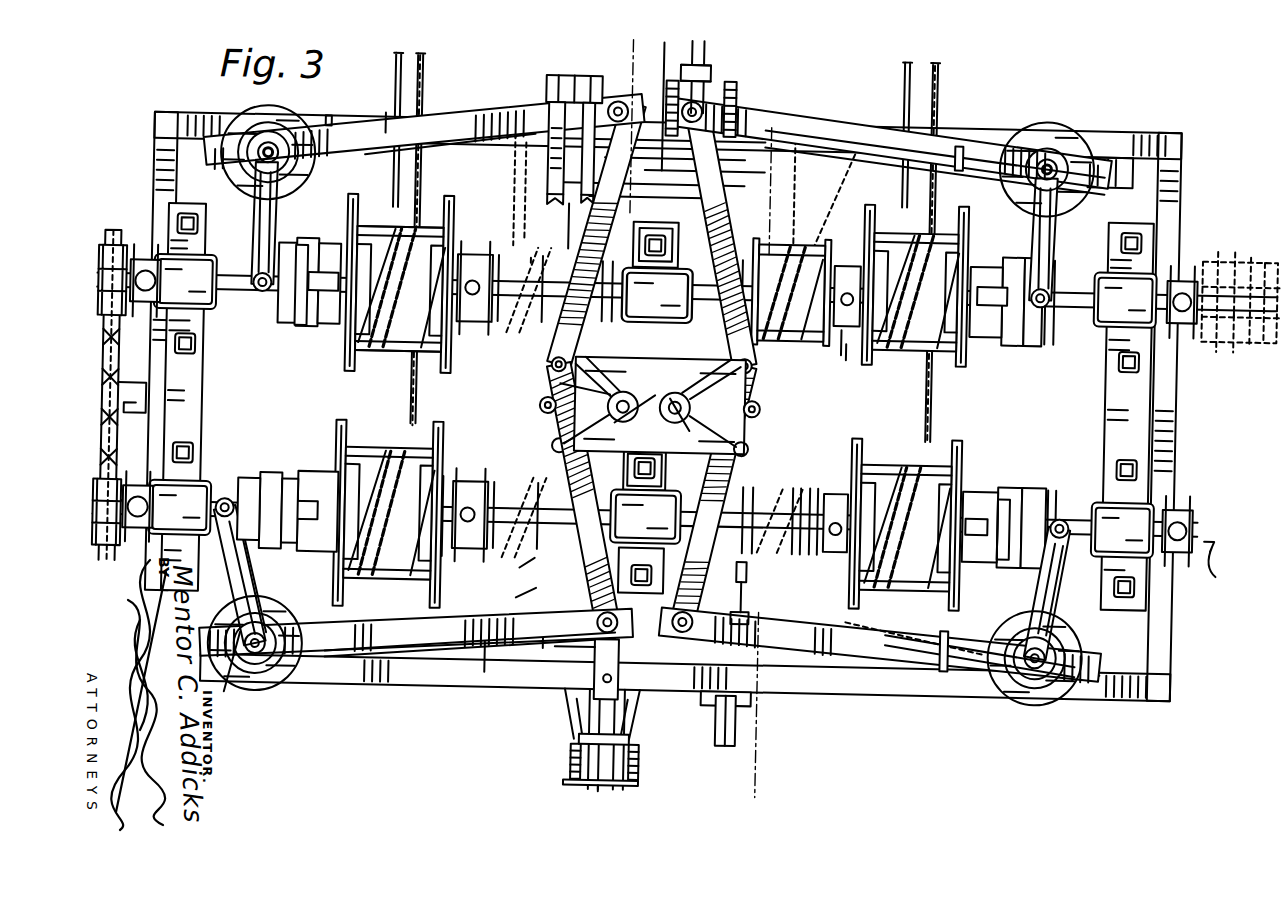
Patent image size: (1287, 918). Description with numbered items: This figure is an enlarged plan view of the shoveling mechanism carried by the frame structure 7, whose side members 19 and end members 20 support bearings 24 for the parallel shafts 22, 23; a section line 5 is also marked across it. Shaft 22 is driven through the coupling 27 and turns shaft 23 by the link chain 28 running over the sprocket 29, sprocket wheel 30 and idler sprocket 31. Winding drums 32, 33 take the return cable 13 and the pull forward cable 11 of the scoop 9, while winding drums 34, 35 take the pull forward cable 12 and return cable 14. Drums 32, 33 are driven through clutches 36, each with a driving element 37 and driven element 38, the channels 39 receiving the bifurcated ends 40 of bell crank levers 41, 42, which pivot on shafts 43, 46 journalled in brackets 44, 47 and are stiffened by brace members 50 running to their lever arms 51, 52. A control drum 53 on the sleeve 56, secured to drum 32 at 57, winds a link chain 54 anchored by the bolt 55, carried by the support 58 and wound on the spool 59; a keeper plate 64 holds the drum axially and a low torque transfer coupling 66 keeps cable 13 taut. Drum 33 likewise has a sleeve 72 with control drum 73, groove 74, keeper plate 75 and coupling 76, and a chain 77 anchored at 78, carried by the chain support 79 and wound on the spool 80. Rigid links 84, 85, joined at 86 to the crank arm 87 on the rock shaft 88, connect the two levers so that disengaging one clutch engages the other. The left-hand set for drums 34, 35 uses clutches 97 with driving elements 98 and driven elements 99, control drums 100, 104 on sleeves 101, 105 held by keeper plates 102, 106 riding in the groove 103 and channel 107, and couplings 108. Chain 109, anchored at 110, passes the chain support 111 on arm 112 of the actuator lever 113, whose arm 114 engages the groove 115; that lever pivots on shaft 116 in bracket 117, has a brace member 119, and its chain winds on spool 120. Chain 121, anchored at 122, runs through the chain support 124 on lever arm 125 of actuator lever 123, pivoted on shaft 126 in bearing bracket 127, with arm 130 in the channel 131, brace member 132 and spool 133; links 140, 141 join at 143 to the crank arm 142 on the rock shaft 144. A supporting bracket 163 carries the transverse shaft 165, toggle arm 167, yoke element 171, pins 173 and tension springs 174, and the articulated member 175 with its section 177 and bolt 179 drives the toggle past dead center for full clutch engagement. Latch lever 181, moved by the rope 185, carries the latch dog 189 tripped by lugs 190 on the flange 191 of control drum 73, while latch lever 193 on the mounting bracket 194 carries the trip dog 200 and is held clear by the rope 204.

The section line 5- 5 is at (620, 57).
The section line 7- 7 is at (700, 57).
The section line 9- 9 is at (528, 262).
The chain 11 is at (938, 72).
The chain 12 is at (396, 68).
The chain 13 is at (904, 182).
The chain 14 is at (424, 68).
The frame top rail 19 is at (1105, 136).
The frame side member 20 is at (150, 155).
The shaft 22 is at (234, 300).
The clutch member 23 is at (298, 488).
The gear box 24 is at (1107, 322).
The sprocket 27 is at (1240, 258).
The drive chain 28 is at (118, 430).
The sprocket 29 is at (118, 245).
The sprocket 30 is at (108, 560).
The chain guide 31 is at (135, 398).
The drum 32 is at (915, 286).
The drum 33 is at (878, 460).
The drum 34 is at (400, 283).
The drum 35 is at (382, 455).
The clutch jaw 36 is at (988, 256).
The clutch sleeve 37 is at (1002, 278).
The clutch key 38 is at (977, 345).
The collar 39 is at (1044, 340).
The shifter lever 40 is at (1052, 257).
The chain 41 is at (852, 150).
The pin 42 is at (968, 640).
The pivot pin 43 is at (1049, 165).
The bracket 44 is at (1090, 190).
The disc 46 is at (1038, 675).
The disc hub 47 is at (1070, 668).
The arm rod 50 is at (988, 172).
The arm 51 is at (784, 116).
The chain 52 is at (932, 632).
The drum 53 is at (791, 292).
The chain 54 is at (793, 220).
The collar 55 is at (735, 275).
The pin 56 is at (842, 327).
The pin 57 is at (846, 358).
The pin 58 is at (952, 136).
The disc 59 is at (1034, 136).
The pivot 64 is at (722, 325).
The collar 66 is at (843, 290).
The collar 72 is at (820, 560).
The chain 73 is at (793, 482).
The gear box 74 is at (692, 512).
The bearing block 75 is at (680, 477).
The collar 76 is at (836, 500).
The rod 77 is at (746, 595).
The collar 78 is at (754, 480).
The arm 79 is at (866, 685).
The rod 80 is at (985, 700).
The link 84 is at (715, 217).
The link 85 is at (740, 442).
The link 86 is at (750, 368).
The roller arm 87 is at (692, 386).
The roller arm 88 is at (682, 425).
The clutch 97 is at (326, 244).
The clutch member 98 is at (296, 330).
The clutch member 99 is at (325, 330).
The chain 100 is at (516, 332).
The collar 101 is at (474, 337).
The collar 102 is at (612, 322).
The bearing block 103 is at (622, 290).
The chain 104 is at (503, 472).
The flange 105 is at (470, 558).
The pivot 106 is at (566, 455).
The link 107 is at (588, 575).
The coupling 108 is at (470, 280).
The chain 109 is at (512, 178).
The rod 110 is at (566, 252).
The pin 111 is at (384, 128).
The pin 112 is at (326, 126).
The arm 113 is at (458, 124).
The lever 114 is at (254, 228).
The collar 115 is at (262, 330).
The pivot pin 116 is at (270, 150).
The disc hub 117 is at (236, 162).
The rod 119 is at (378, 152).
The disc 120 is at (270, 118).
The link 121 is at (545, 595).
The link 122 is at (540, 560).
The pin 123 is at (490, 690).
The arm 124 is at (357, 662).
The pin 125 is at (556, 647).
The disc 126 is at (265, 662).
The disc hub 127 is at (256, 688).
The lever 130 is at (247, 570).
The pivot 131 is at (231, 480).
The rod 132 is at (440, 660).
The link 133 is at (285, 615).
The link 140 is at (608, 212).
The pivot 141 is at (600, 410).
The link 142 is at (572, 386).
The pivot 143 is at (556, 366).
The pivot 144 is at (540, 407).
The bracket 163 is at (580, 704).
The plate 165 is at (580, 741).
The bolt 167 is at (602, 790).
The rod 171 is at (672, 70).
The plate 173 is at (572, 788).
The spring 174 is at (732, 92).
The pin 175 is at (598, 666).
The cross head 177 is at (710, 85).
The block 179 is at (612, 678).
The bracket 181 is at (712, 705).
The stop 185 is at (742, 730).
The bracket 189 is at (745, 612).
The collar 190 is at (797, 478).
The bracket 191 is at (742, 572).
The chain 193 is at (522, 152).
The bracket 194 is at (562, 96).
The guide 200 is at (558, 228).
The bracket 204 is at (568, 90).